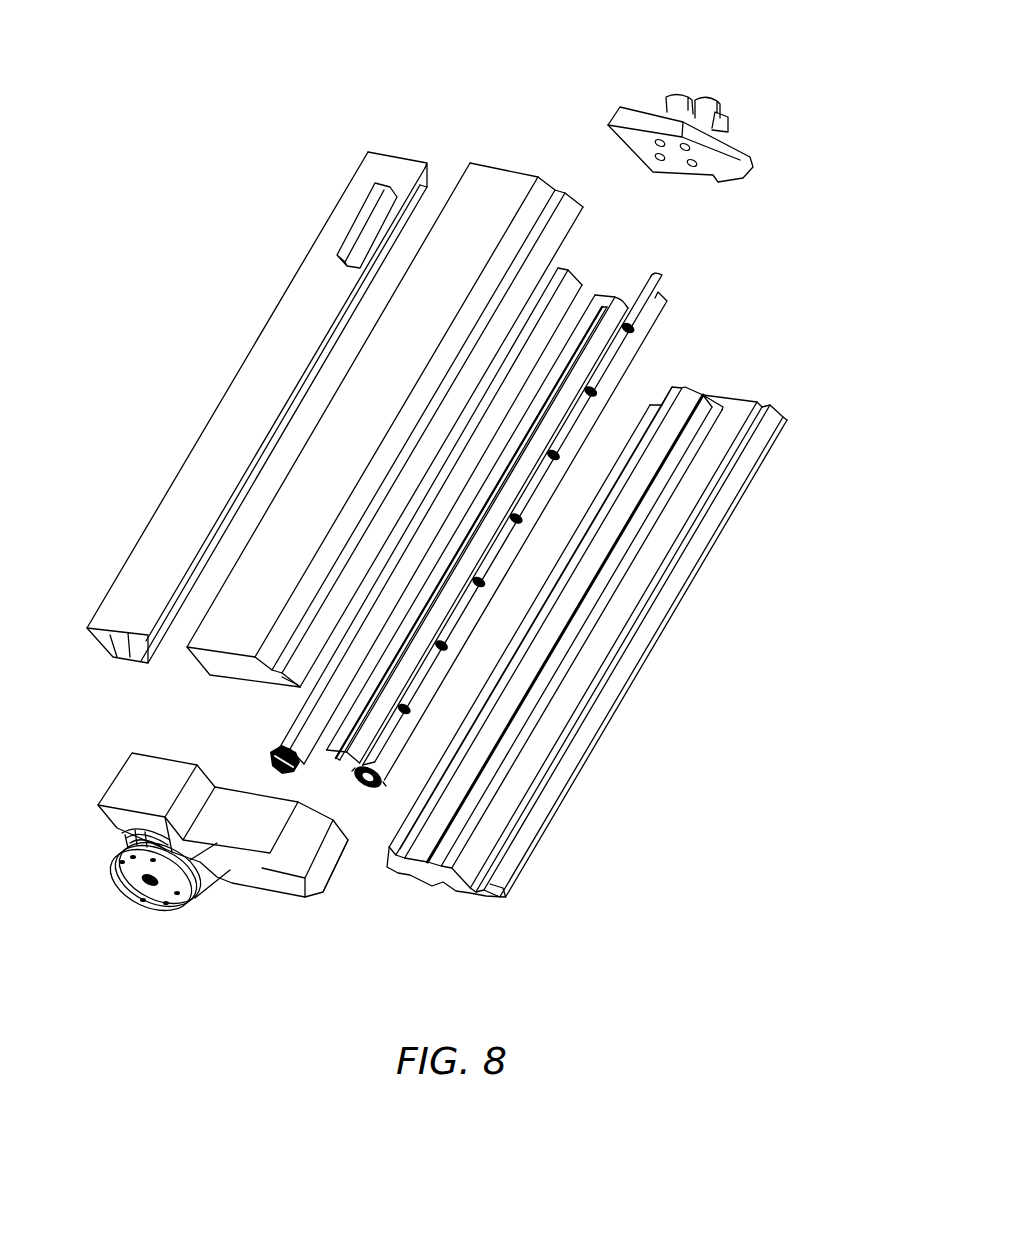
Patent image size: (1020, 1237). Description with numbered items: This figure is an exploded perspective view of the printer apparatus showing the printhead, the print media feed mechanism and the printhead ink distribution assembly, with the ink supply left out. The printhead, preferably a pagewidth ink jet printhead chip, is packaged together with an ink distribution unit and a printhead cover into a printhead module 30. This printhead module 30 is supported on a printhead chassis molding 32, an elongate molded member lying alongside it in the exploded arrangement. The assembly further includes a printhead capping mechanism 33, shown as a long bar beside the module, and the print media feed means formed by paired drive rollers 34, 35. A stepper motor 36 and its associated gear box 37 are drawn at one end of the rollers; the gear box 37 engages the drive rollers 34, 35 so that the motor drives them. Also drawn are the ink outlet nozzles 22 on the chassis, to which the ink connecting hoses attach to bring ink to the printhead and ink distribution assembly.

The ink outlet nozzles 22 is at (707, 107).
The printhead module 30 is at (488, 183).
The printhead chassis molding 32 is at (717, 398).
The printhead capping mechanism 33 is at (600, 310).
The drive roller 34 is at (381, 790).
The drive roller 35 is at (280, 743).
The stepper motor 36 is at (190, 868).
The gear box 37 is at (130, 782).